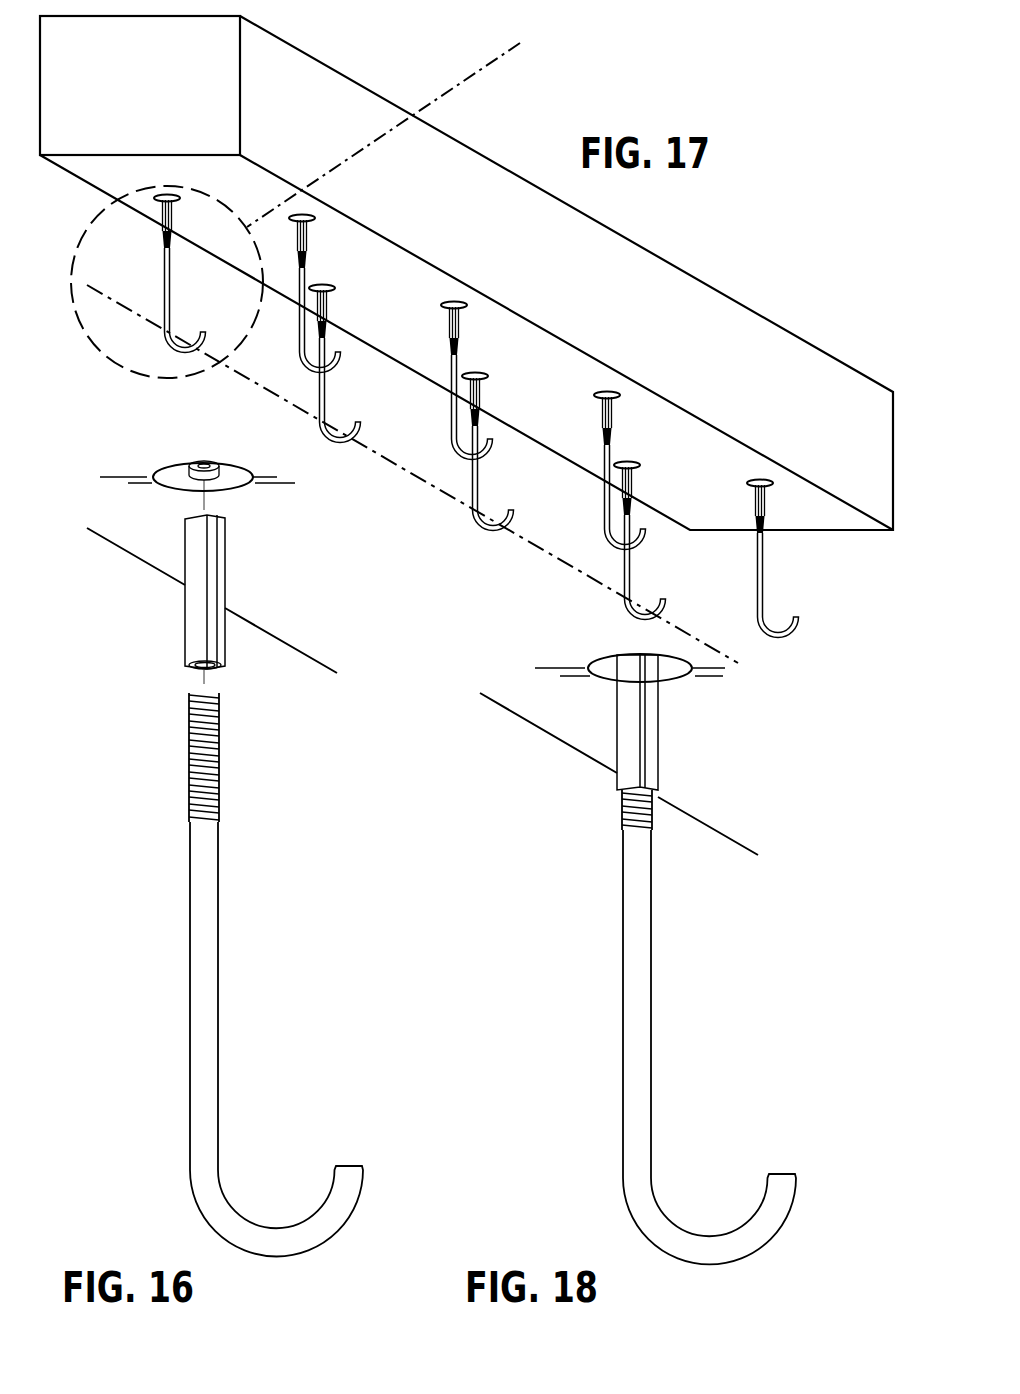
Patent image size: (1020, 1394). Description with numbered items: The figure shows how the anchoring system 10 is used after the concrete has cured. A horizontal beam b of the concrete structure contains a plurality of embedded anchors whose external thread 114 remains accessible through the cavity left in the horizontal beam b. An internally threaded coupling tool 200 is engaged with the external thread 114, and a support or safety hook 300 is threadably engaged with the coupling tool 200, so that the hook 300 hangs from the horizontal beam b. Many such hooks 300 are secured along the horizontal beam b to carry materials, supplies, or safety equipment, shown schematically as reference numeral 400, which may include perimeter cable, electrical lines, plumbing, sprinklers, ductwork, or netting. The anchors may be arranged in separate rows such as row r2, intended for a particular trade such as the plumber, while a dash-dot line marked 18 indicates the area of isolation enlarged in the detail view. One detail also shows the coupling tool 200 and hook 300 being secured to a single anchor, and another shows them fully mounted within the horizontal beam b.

In FIG. 17, the anchoring system 10 is at (466, 273).
In FIG. 17, the section line 18 is at (402, 118).
In FIG. 16, the external thread 114 is at (162, 450).
In FIG. 18, the external thread 114 is at (630, 668).
In FIG. 17, the coupling tool 200 is at (691, 399).
In FIG. 16, the coupling tool 200 is at (181, 605).
In FIG. 18, the coupling tool 200 is at (612, 741).
In FIG. 17, the support hook 300 is at (453, 452).
In FIG. 16, the support hook 300 is at (276, 975).
In FIG. 18, the support hook 300 is at (709, 1027).
In FIG. 17, the safety equipment 400 is at (433, 474).
In FIG. 17, the horizontal beam b is at (809, 318).
In FIG. 16, the horizontal beam b is at (200, 600).
In FIG. 18, the horizontal beam b is at (661, 764).
In FIG. 17, the row r2 is at (486, 361).